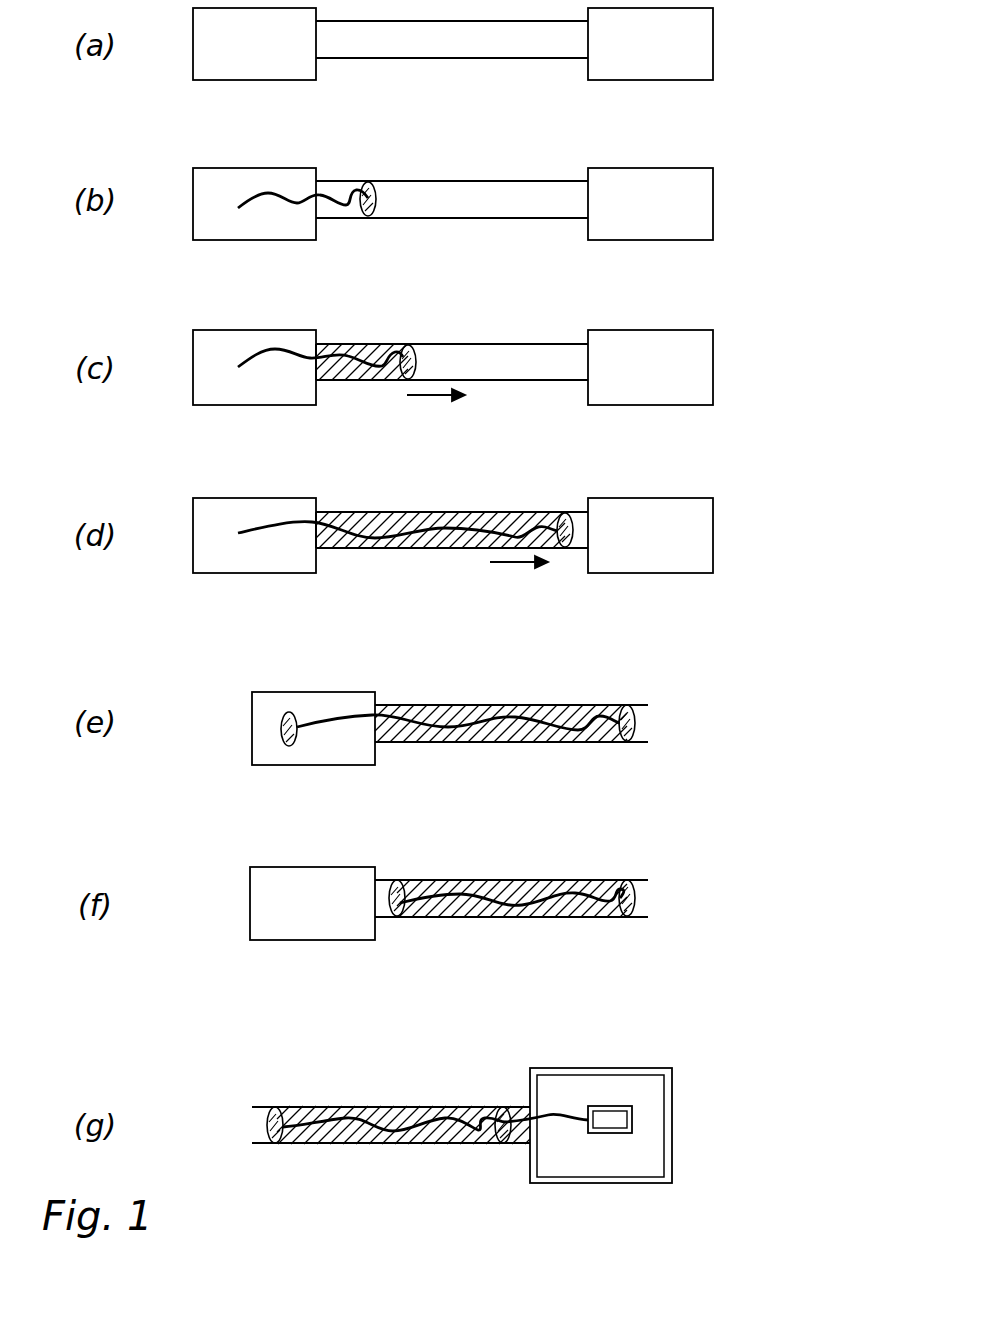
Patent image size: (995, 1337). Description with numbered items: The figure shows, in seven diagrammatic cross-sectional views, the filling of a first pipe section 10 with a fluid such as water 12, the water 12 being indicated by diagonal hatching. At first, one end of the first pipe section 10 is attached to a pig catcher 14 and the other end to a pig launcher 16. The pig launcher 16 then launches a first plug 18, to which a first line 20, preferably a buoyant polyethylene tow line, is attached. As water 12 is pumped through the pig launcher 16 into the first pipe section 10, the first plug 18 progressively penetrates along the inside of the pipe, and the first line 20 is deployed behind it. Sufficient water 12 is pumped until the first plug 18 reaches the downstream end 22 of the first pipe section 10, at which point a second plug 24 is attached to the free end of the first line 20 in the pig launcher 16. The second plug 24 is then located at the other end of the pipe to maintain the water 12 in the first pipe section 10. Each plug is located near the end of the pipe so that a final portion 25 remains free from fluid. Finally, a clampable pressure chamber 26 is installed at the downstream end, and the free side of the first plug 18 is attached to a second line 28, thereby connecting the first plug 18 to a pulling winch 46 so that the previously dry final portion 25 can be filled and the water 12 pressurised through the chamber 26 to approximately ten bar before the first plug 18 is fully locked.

The first pipe section 10 is at (455, 59).
The water 12 is at (353, 380).
The pig catcher 14 is at (625, 81).
The pig launcher 16 is at (228, 81).
The first plug 18 is at (372, 182).
The first line 20 is at (317, 195).
The downstream end 22 is at (648, 745).
The second plug 24 is at (287, 712).
The final portion 25 is at (648, 700).
The clampable pressure chamber 26 is at (592, 1067).
The second line 28 is at (547, 1115).
The pulling winch 46 is at (632, 1118).